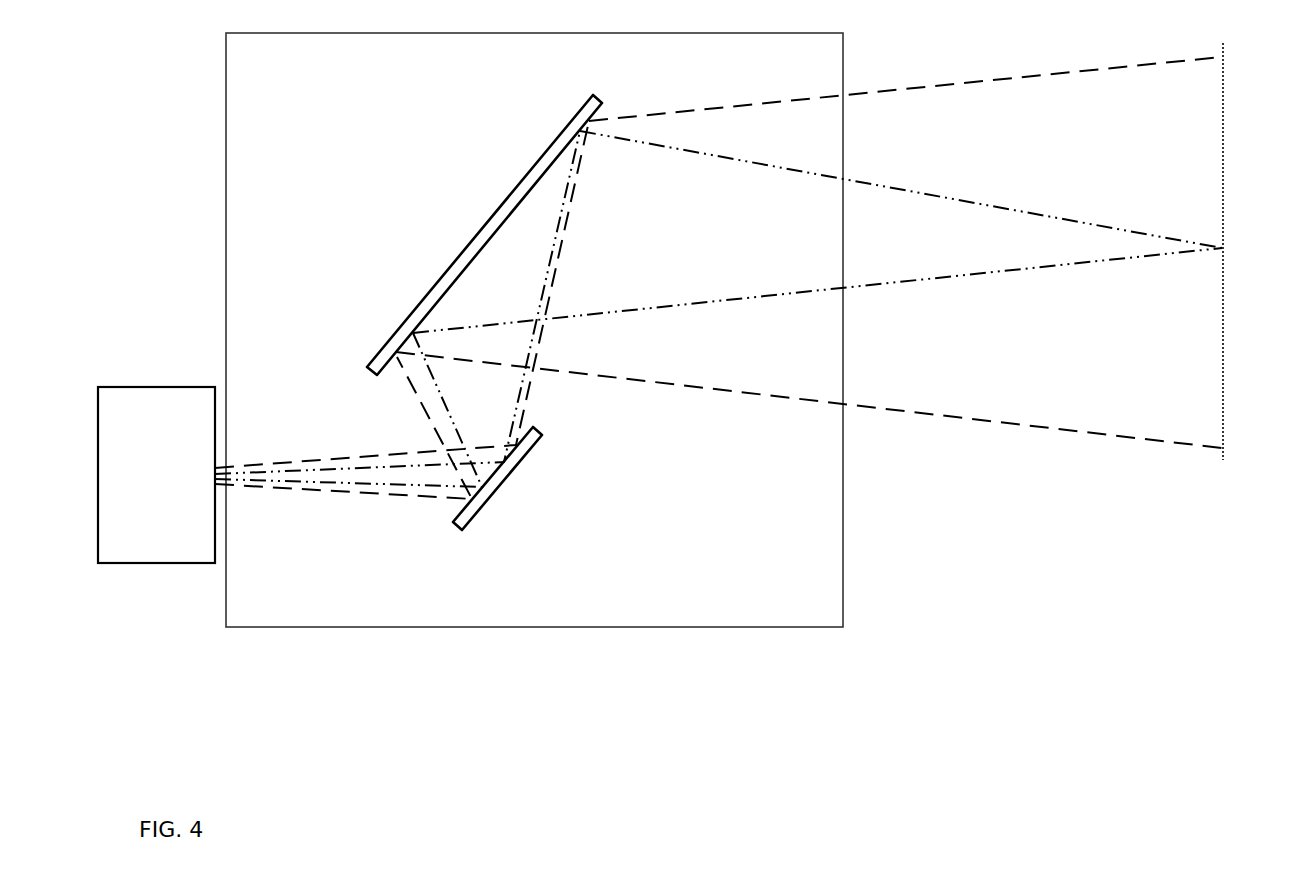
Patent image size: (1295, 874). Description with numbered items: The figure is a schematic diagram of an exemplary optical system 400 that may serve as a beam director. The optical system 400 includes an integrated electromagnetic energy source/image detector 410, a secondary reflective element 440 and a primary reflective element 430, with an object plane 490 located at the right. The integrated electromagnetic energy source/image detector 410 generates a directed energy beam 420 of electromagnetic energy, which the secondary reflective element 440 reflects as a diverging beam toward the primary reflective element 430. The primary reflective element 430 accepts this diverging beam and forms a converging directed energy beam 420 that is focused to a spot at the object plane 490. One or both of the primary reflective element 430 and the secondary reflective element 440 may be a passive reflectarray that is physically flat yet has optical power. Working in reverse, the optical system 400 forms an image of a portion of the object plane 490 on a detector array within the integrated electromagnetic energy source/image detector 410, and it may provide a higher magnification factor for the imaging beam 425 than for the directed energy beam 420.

The optical system 400 is at (843, 500).
The integrated electromagnetic energy source/image detector 410 is at (156, 475).
The directed energy beam 420 is at (898, 189).
The imaging beam 425 is at (906, 412).
The primary reflective element 430 is at (570, 123).
The secondary reflective element 440 is at (542, 430).
The object plane 490 is at (1223, 80).